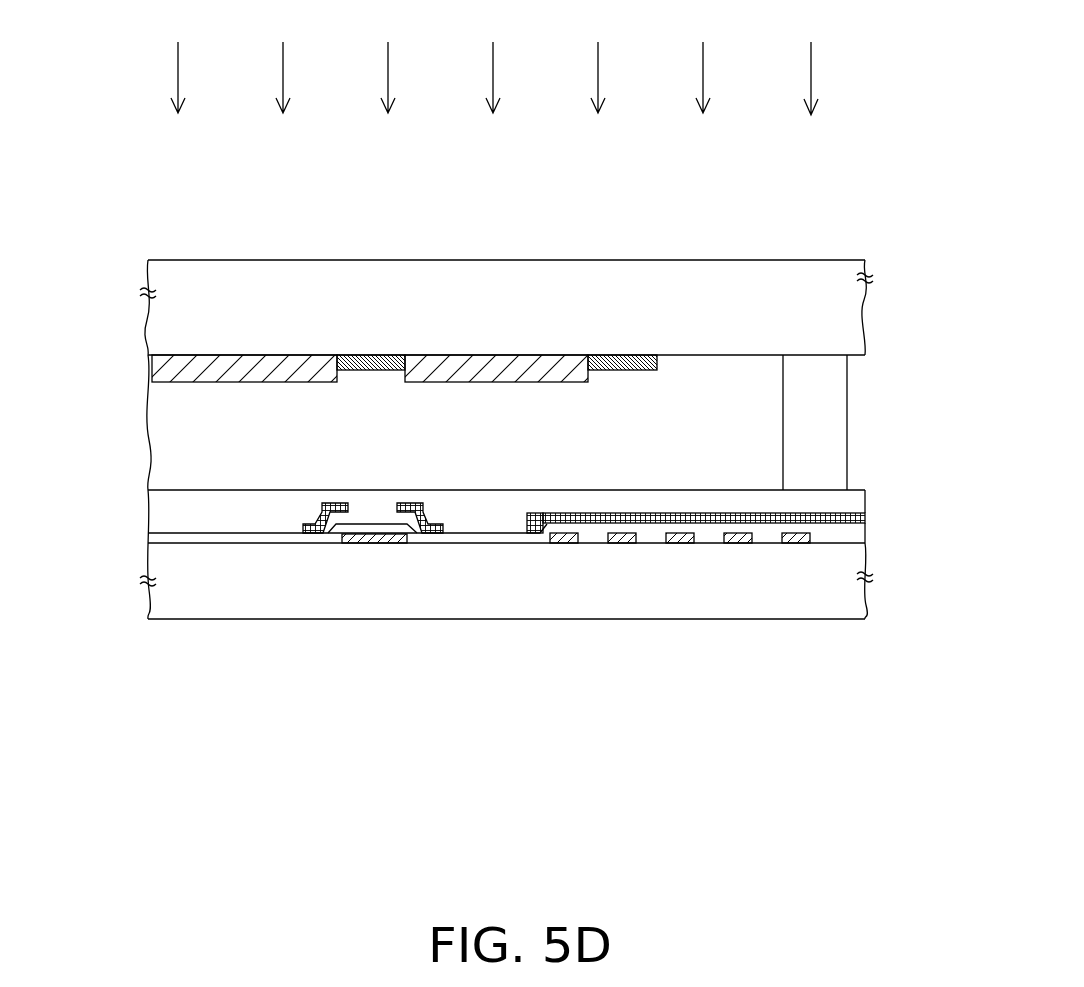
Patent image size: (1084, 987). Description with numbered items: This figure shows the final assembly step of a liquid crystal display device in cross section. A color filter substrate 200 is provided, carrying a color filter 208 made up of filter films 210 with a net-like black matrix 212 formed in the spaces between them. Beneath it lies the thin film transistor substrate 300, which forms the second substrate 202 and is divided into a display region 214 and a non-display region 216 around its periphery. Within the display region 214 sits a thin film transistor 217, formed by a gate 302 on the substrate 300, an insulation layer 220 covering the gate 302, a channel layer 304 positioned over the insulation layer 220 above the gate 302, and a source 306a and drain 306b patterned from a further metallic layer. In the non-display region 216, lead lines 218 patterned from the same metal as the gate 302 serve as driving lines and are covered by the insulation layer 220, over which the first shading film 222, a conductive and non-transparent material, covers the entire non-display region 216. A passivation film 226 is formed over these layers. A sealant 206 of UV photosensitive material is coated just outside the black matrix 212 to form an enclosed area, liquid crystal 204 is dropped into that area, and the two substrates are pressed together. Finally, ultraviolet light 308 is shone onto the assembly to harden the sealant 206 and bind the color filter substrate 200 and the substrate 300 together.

The first substrate 200 is at (868, 310).
The second substrate 202 is at (543, 633).
The liquid crystal layer 204 is at (163, 422).
The sealant 206 is at (830, 422).
The color filter 208 is at (404, 264).
The filter film 210 is at (285, 364).
The black matrix 212 is at (372, 362).
The display region 214 is at (525, 633).
The non-display region 216 is at (865, 633).
The thin film transistor 217 is at (411, 658).
The lead lines 218 is at (855, 567).
The insulation layer 220 is at (858, 529).
The first shading film 222 is at (858, 519).
The passivation film 226 is at (862, 500).
The substrate 300 is at (824, 594).
The gate 302 is at (375, 543).
The channel layer 304 is at (418, 527).
The source 306a is at (308, 533).
The drain 306b is at (484, 629).
The ultraviolet light 308 is at (812, 78).